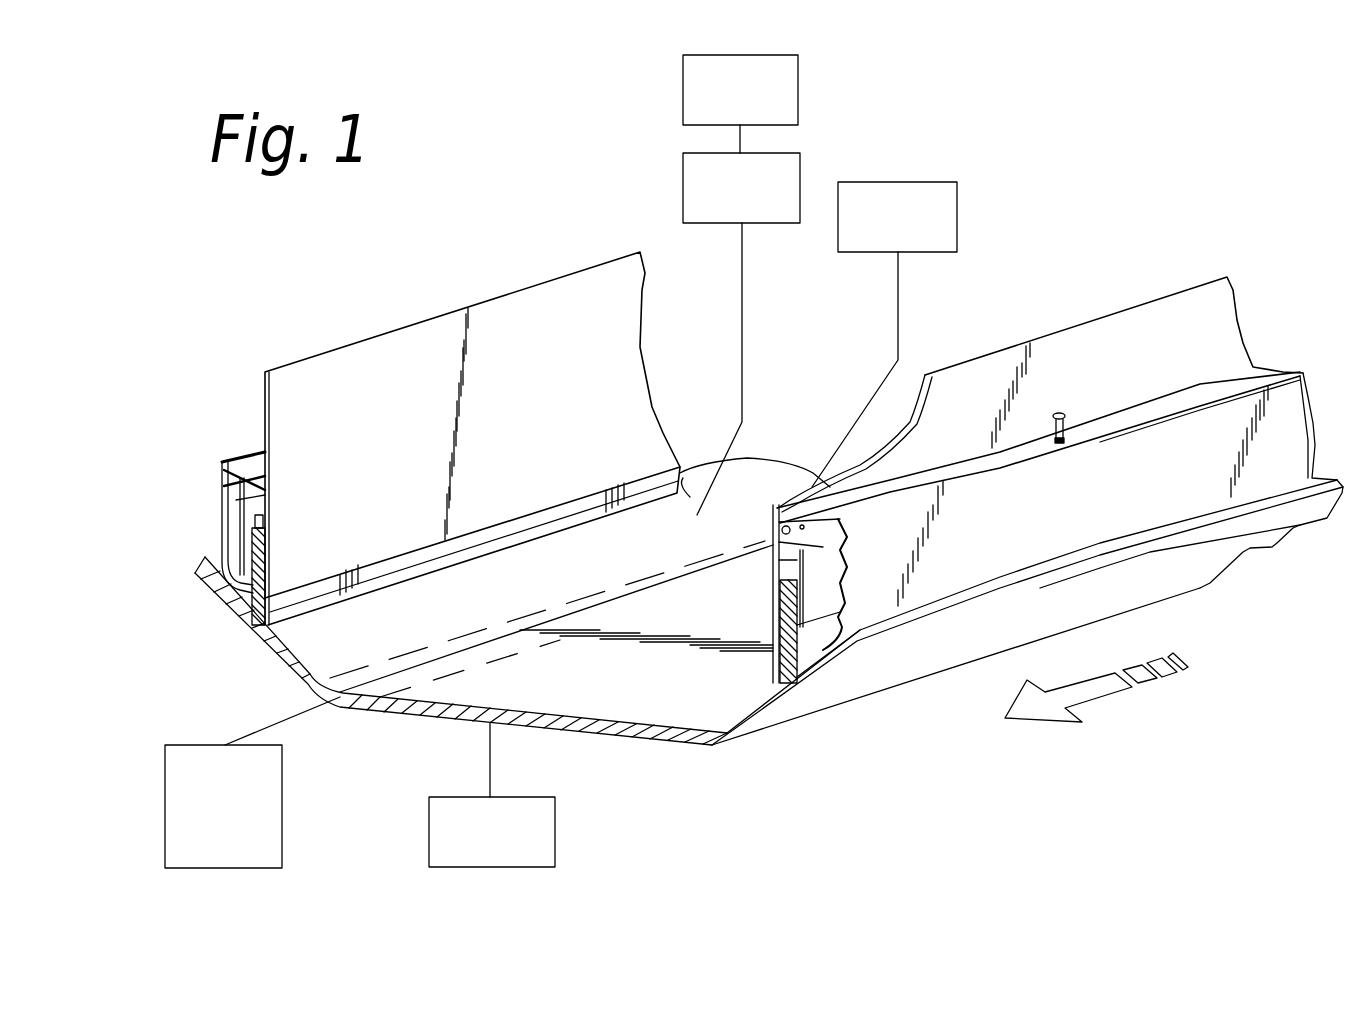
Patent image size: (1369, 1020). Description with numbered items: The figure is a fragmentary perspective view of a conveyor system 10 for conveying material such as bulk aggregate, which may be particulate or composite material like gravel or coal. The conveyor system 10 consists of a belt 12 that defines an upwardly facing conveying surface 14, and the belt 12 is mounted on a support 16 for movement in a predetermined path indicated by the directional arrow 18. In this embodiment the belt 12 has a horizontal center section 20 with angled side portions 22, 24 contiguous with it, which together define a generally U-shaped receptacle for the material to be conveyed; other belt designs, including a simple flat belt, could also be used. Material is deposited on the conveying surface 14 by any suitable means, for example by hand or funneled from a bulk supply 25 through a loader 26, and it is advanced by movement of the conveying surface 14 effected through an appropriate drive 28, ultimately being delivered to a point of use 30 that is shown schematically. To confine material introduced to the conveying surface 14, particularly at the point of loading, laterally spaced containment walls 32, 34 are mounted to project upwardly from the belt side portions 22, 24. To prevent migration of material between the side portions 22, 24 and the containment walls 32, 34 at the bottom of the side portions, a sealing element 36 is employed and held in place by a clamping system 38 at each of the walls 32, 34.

The conveyor system 10 is at (550, 220).
The belt 12 is at (283, 655).
The conveying surface 14 is at (690, 497).
The support 16 is at (480, 860).
The directional arrow 18 is at (1090, 693).
The horizontal center section 20 is at (683, 617).
The angled side portion 22 is at (543, 584).
The angled side portion 24 is at (933, 658).
The bulk supply 25 is at (728, 117).
The loader 26 is at (729, 215).
The drive 28 is at (885, 243).
The point of use 30 is at (211, 860).
The containment wall 32 is at (292, 425).
The containment wall 34 is at (948, 380).
The sealing element 36 is at (388, 576).
The clamping system 38 is at (233, 448).